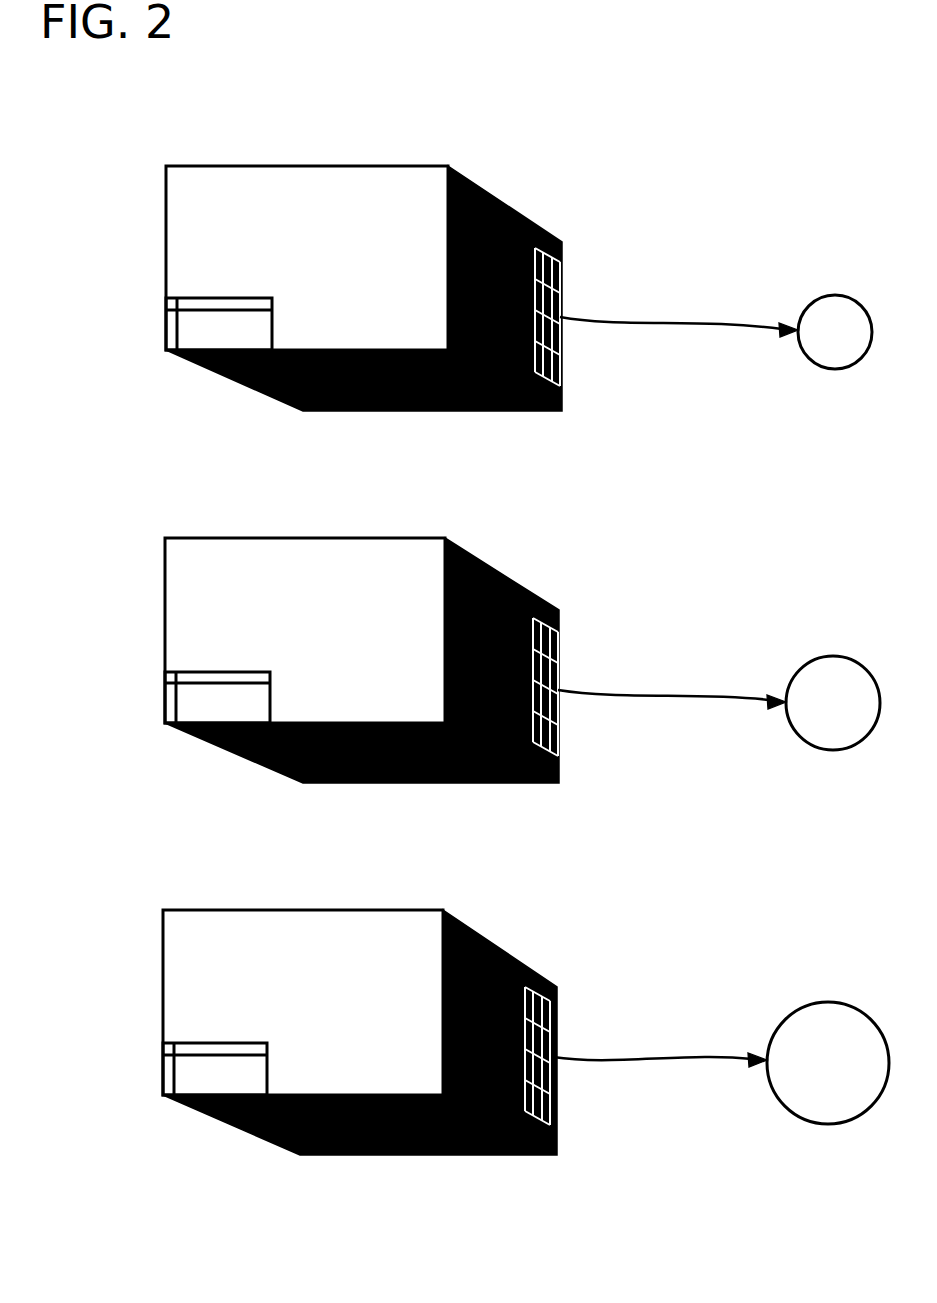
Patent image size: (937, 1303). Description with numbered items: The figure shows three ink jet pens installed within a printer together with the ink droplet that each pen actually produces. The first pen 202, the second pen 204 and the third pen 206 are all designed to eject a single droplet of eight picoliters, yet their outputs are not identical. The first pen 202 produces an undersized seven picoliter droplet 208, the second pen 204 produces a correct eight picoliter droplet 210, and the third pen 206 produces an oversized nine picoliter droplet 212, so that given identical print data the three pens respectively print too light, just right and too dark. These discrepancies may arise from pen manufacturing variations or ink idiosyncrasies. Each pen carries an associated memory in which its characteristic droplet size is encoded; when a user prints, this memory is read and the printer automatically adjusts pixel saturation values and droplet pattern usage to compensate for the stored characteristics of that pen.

The first pen 202 is at (332, 272).
The second pen 204 is at (332, 645).
The third pen 206 is at (330, 1017).
The 7 picoliter droplet 208 is at (808, 346).
The 8 picoliter droplet 210 is at (860, 718).
The 9 picoliter droplet 212 is at (855, 1077).